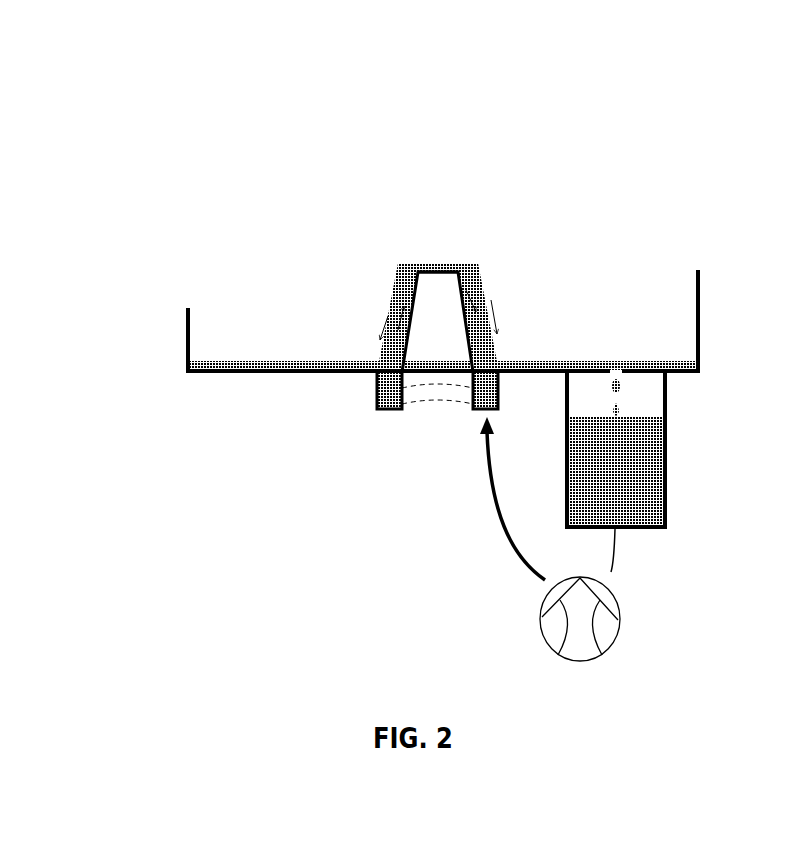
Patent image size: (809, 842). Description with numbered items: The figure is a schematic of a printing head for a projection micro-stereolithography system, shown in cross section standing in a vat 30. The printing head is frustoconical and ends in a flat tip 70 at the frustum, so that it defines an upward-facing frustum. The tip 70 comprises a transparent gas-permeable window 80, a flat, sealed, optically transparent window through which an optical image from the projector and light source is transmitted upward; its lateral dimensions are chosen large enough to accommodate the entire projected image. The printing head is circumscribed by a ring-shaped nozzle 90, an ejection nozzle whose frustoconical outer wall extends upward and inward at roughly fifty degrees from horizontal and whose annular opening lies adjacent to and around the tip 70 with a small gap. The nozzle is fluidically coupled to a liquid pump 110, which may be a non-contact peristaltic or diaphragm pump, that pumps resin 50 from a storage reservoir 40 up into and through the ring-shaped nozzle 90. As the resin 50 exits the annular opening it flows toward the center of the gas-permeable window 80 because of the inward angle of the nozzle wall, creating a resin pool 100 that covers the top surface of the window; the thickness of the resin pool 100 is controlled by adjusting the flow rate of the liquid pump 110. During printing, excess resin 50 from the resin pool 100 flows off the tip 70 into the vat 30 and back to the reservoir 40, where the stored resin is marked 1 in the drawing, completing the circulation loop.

The resin 1 is at (616, 471).
The vat 30 is at (213, 335).
The storage reservoir 40 is at (640, 390).
The resin 50 is at (578, 365).
The tip 70 is at (413, 260).
The gas-permeable window 80 is at (435, 270).
The ring-shaped nozzle 90 is at (474, 368).
The resin pool 100 is at (440, 260).
The liquid pump 110 is at (608, 627).